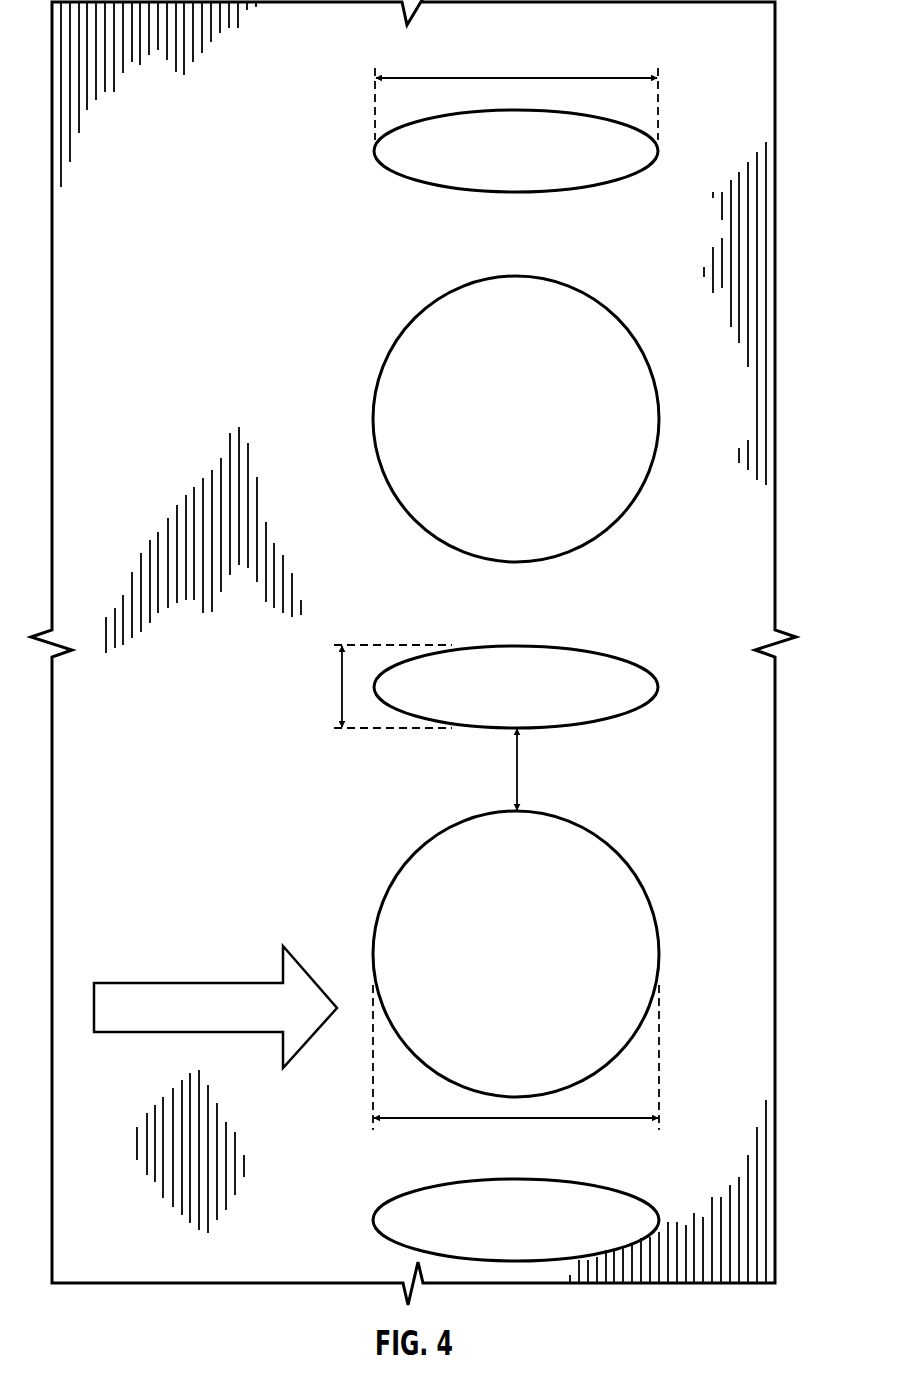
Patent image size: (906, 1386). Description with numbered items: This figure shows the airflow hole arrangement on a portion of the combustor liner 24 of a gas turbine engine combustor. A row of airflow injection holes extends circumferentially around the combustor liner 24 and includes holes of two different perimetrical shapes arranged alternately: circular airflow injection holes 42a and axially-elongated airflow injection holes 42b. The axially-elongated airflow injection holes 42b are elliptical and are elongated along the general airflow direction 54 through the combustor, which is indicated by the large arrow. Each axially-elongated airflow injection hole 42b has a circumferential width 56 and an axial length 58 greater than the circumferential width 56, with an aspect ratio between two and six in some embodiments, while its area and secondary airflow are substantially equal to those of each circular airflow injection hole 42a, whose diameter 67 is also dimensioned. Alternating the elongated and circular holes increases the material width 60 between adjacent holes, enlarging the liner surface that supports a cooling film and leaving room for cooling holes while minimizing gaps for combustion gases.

The combustor liner 24 is at (172, 327).
The circular airflow injection hole 42a is at (374, 422).
The axially-elongated airflow injection hole 42b is at (375, 151).
The general airflow direction 54 is at (189, 983).
The circumferential width 56 is at (340, 688).
The axial length 58 is at (517, 78).
The material width 60 is at (519, 770).
The diameter of circular aperture 67 is at (517, 1119).